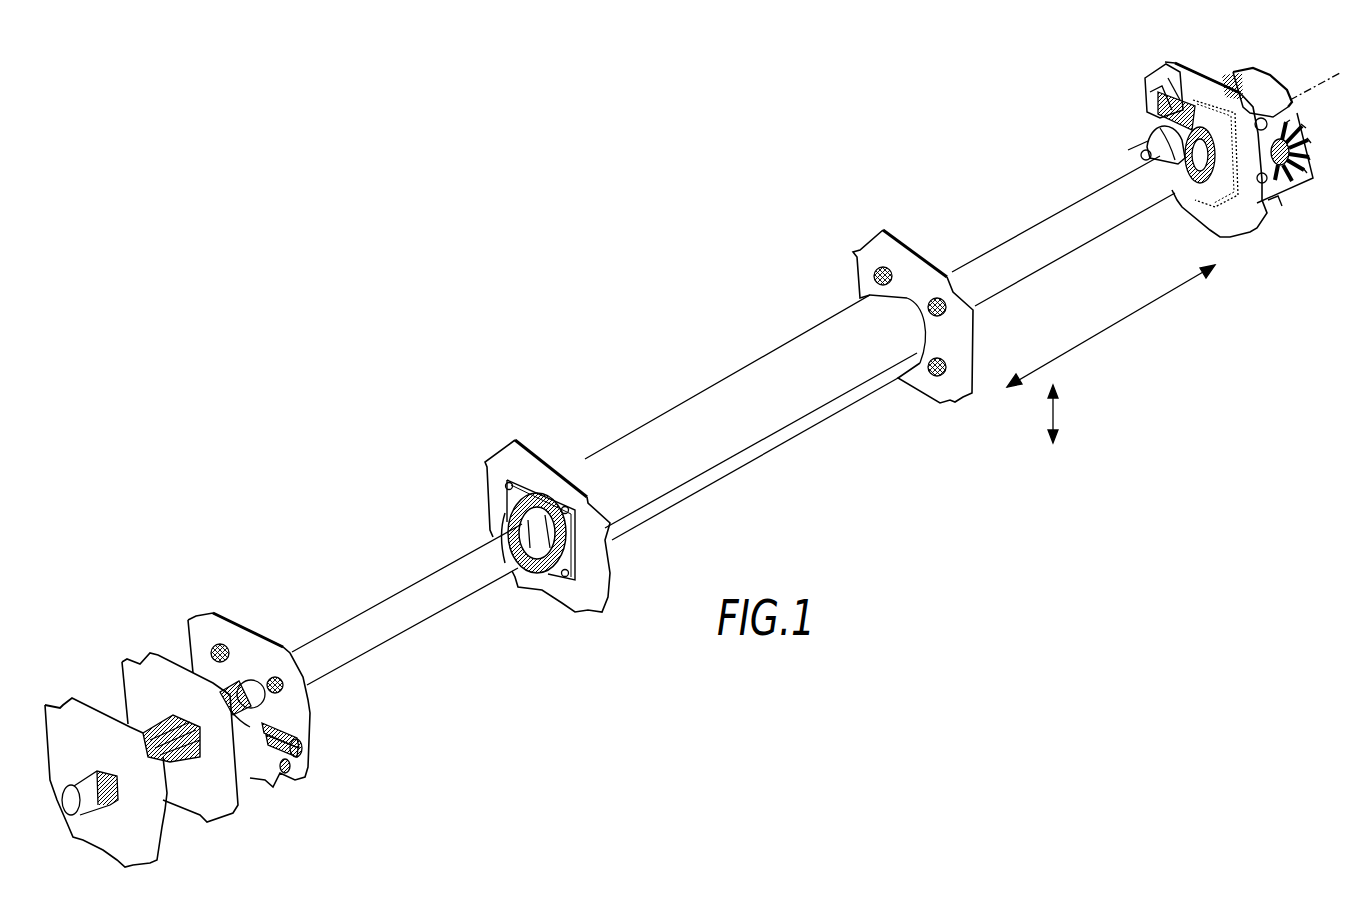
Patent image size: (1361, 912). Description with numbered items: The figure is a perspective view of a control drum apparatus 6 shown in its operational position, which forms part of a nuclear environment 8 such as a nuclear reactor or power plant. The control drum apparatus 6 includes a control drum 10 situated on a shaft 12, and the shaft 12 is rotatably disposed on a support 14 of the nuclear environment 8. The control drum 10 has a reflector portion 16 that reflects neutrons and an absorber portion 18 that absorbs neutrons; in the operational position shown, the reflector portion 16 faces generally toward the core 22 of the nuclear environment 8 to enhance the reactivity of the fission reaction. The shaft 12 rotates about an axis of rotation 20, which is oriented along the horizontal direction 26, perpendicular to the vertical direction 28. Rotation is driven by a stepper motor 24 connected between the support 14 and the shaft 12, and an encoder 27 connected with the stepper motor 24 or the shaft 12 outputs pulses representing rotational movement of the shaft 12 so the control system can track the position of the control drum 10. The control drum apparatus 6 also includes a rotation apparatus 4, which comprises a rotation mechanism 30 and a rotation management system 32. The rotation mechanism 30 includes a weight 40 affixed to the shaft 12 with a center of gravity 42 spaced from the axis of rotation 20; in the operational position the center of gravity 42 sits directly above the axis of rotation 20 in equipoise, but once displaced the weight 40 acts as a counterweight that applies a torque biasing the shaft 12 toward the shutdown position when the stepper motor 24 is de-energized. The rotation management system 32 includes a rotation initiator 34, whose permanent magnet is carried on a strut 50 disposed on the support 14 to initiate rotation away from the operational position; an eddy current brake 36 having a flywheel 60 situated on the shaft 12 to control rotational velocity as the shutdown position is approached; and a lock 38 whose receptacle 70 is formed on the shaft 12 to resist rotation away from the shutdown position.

The rotation apparatus 4 is at (1200, 64).
The control drum apparatus 6 is at (590, 667).
The nuclear environment 8 is at (996, 175).
The control drum 10 is at (606, 466).
The shaft 12 is at (390, 613).
The support 14 is at (952, 405).
The reflector portion 16 is at (726, 388).
The absorber portion 18 is at (722, 473).
The axis of rotation 20 is at (1338, 100).
The core 22 is at (678, 321).
The stepper motor 24 is at (167, 745).
The horizontal direction 26 is at (1112, 332).
The encoder 27 is at (95, 785).
The vertical direction 28 is at (1058, 418).
The rotation mechanism 30 is at (1105, 134).
The rotation management system 32 is at (1255, 65).
The rotation initiator 34 is at (1146, 80).
The eddy current brake 36 is at (1283, 208).
The lock 38 is at (268, 790).
The weight 40 is at (1125, 135).
The center of gravity 42 is at (1140, 156).
The strut 50 is at (1172, 76).
The flywheel 60 is at (1285, 77).
The receptacle 70 is at (238, 678).